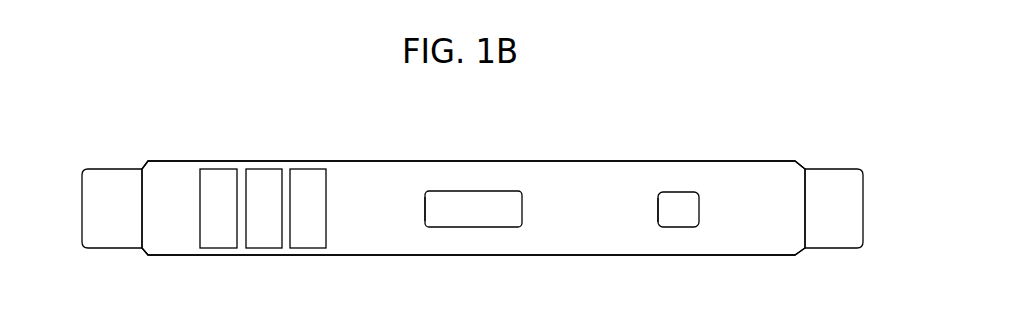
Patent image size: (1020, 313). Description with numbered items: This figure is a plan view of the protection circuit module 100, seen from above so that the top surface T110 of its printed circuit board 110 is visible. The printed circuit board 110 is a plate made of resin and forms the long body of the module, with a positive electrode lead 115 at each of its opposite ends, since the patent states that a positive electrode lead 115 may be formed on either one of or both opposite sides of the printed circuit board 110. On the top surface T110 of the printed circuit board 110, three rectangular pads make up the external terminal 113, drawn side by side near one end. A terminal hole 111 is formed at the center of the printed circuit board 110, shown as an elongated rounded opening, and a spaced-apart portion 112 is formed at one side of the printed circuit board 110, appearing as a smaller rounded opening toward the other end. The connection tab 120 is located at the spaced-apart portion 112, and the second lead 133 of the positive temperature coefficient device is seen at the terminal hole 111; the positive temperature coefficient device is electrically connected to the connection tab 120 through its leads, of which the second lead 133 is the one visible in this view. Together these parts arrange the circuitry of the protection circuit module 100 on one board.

The protection circuit module 100 is at (88, 111).
The printed circuit board 110 is at (400, 243).
The terminal hole 111 is at (428, 206).
The spaced-apart portion 112 is at (661, 207).
The external terminal 113 is at (305, 172).
The positive electrode lead 115 is at (110, 243).
The connection tab 120 is at (690, 198).
The second lead 133 is at (490, 200).
The top surface T110 is at (738, 196).